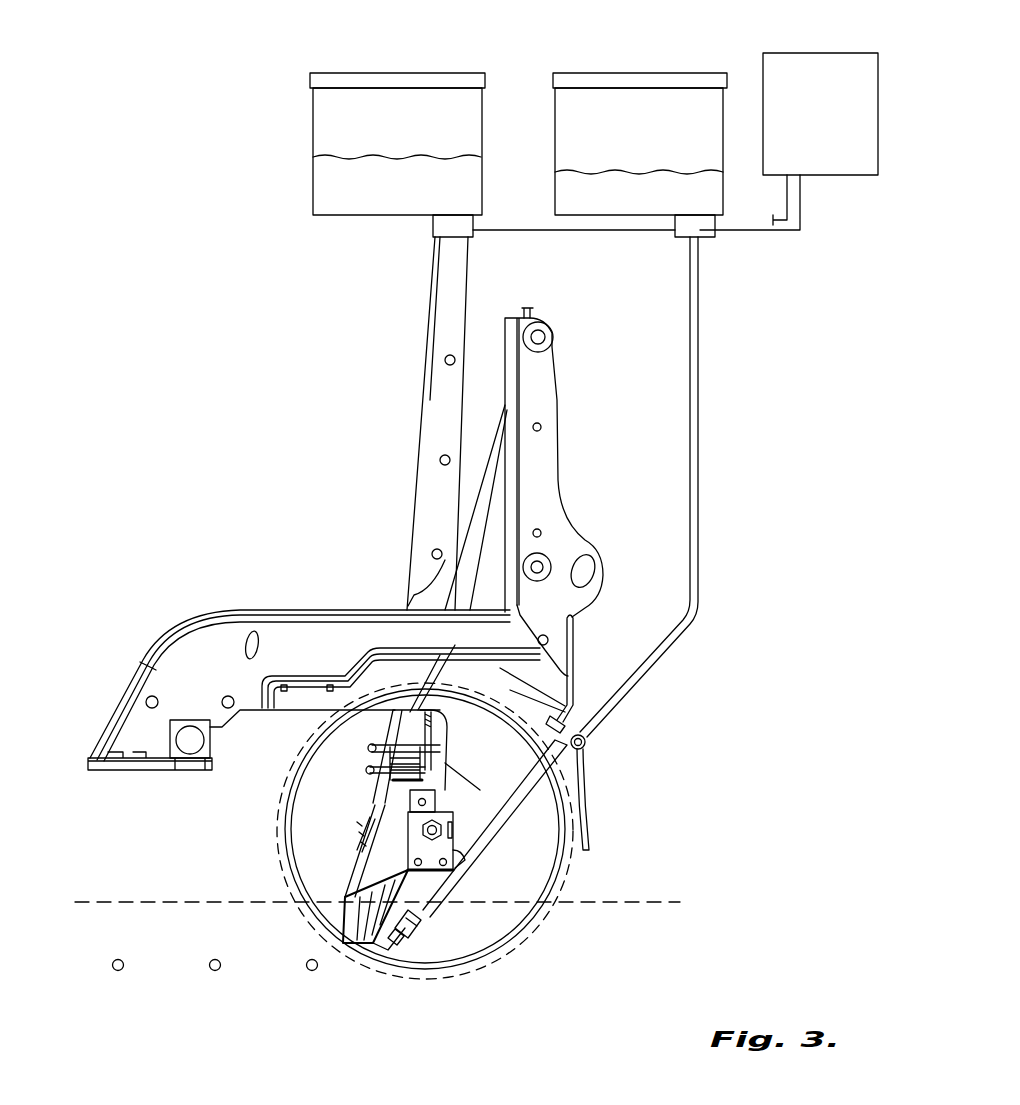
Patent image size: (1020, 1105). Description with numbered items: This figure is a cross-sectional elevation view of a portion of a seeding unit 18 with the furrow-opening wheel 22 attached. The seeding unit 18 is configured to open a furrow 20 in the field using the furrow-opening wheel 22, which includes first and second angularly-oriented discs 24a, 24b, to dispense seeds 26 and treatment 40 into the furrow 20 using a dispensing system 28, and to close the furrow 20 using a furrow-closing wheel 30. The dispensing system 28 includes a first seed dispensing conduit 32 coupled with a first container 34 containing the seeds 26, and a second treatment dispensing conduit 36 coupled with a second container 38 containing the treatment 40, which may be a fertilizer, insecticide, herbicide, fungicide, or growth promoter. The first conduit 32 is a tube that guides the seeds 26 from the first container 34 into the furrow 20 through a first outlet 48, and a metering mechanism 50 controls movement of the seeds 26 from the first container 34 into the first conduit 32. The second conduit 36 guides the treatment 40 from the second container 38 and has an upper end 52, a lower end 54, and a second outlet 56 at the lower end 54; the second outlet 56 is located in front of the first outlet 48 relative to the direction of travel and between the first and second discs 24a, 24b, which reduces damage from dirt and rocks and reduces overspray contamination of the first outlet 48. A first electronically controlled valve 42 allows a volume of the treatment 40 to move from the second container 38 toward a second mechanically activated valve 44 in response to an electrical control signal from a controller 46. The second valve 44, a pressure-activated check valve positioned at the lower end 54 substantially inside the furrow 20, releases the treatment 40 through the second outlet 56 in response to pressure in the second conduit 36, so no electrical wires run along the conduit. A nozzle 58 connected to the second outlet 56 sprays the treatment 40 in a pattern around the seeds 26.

The seeding unit 18 is at (205, 172).
The furrow 20 is at (688, 920).
The furrow-opening wheel 22 is at (521, 976).
The first angularly-oriented disc 24a is at (568, 868).
The second angularly-oriented disc 24b is at (515, 915).
The seeds 26 is at (68, 1010).
The dispensing system 28 is at (212, 803).
The furrow-closing wheel 30 is at (506, 520).
The first seed dispensing conduit 32 is at (443, 392).
The first container 34 is at (362, 75).
The second treatment dispensing conduit 36 is at (540, 790).
The second container 38 is at (622, 75).
The treatment 40 is at (594, 208).
The first electronically controlled valve 42 is at (703, 237).
The second mechanically activated valve 44 is at (412, 936).
The controller 46 is at (820, 114).
The first outlet 48 is at (345, 922).
The metering mechanism 50 is at (438, 228).
The upper end 52 is at (545, 800).
The lower end 54 is at (445, 915).
The second outlet 56 is at (385, 945).
The nozzle 58 is at (405, 950).